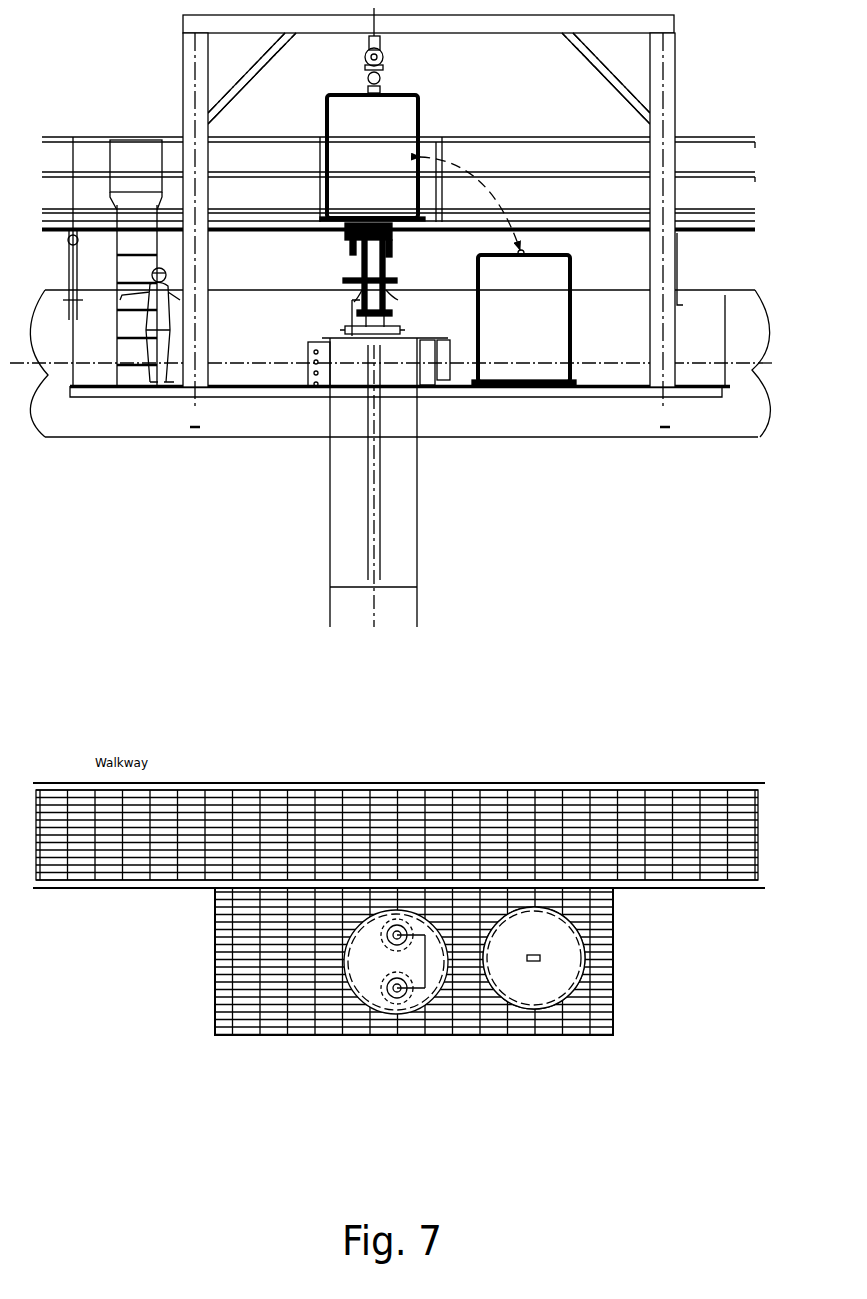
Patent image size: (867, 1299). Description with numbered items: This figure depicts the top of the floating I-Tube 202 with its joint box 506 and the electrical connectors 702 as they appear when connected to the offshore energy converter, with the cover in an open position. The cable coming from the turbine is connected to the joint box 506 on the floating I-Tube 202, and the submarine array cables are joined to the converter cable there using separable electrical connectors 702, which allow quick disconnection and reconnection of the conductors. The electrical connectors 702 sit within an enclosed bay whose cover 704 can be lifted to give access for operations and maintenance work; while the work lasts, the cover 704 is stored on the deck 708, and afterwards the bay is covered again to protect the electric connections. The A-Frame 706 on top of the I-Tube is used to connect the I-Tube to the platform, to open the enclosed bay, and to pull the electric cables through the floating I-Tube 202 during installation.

The floating I-Tube 202 is at (421, 526).
The joint box 506 is at (343, 248).
The electrical connectors 702 is at (426, 1007).
The cover 704 is at (540, 252).
The A-Frame 706 is at (315, 387).
The deck 708 is at (603, 922).